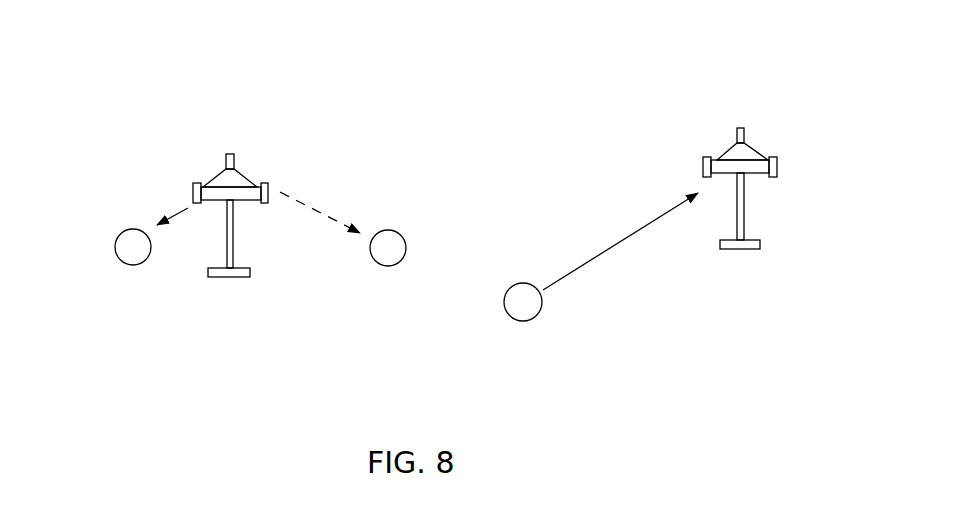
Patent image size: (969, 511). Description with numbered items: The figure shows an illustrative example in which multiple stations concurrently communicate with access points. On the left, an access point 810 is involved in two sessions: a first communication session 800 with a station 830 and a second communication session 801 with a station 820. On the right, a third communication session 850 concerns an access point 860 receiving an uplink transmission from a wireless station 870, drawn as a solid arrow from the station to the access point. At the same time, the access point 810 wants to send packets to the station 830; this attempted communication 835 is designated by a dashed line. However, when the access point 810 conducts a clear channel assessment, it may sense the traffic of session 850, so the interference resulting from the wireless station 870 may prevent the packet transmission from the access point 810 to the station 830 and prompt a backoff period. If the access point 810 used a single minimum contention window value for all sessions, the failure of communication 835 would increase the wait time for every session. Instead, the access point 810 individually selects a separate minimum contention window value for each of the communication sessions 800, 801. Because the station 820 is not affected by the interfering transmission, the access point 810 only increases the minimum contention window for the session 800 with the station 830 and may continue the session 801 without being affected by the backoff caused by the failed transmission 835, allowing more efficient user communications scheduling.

The first communication session 800 is at (358, 123).
The second communication session 801 is at (128, 141).
The access point 810 is at (231, 154).
The station 820 is at (128, 229).
The station 830 is at (385, 230).
The attempted communication 835 is at (302, 202).
The third communication session 850 is at (548, 84).
The access point 860 is at (738, 128).
The station 870 is at (522, 283).